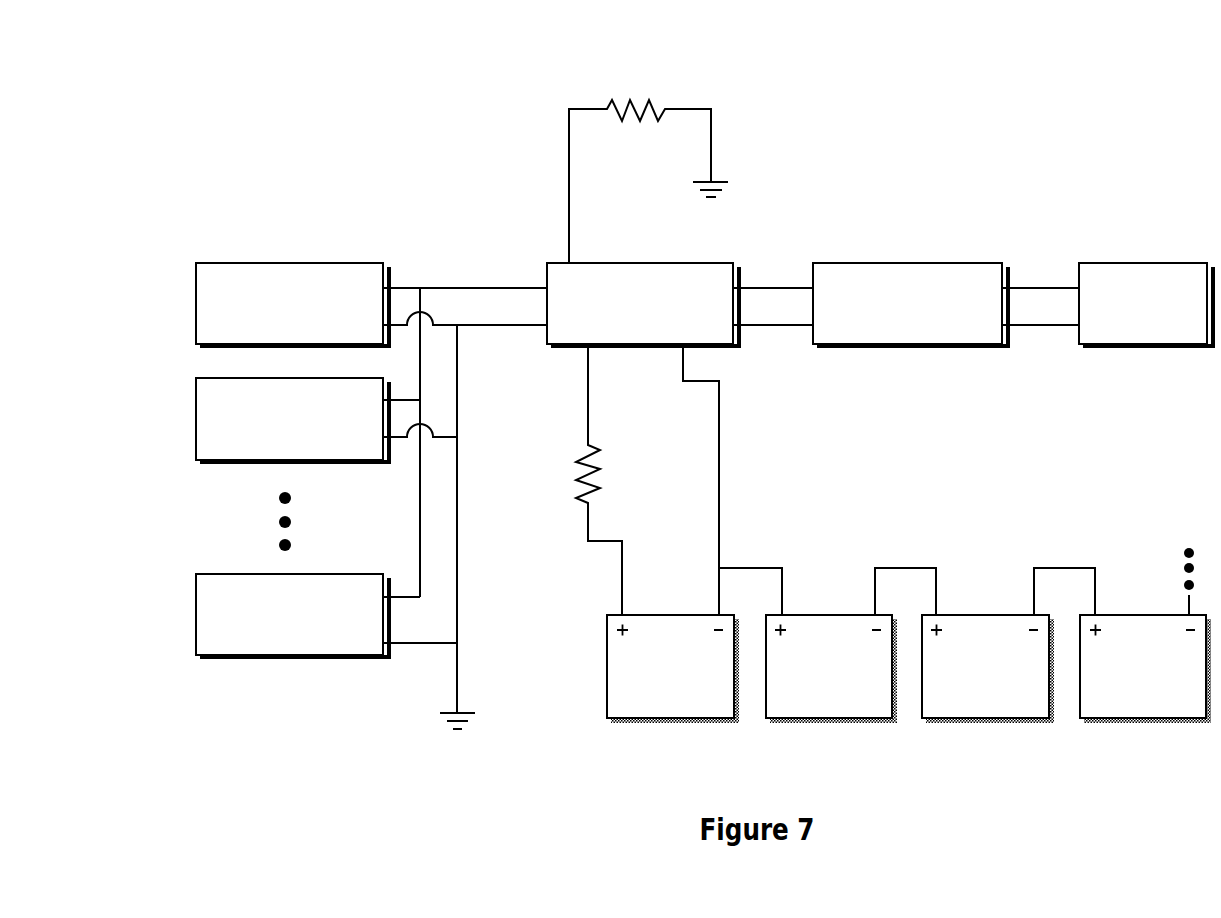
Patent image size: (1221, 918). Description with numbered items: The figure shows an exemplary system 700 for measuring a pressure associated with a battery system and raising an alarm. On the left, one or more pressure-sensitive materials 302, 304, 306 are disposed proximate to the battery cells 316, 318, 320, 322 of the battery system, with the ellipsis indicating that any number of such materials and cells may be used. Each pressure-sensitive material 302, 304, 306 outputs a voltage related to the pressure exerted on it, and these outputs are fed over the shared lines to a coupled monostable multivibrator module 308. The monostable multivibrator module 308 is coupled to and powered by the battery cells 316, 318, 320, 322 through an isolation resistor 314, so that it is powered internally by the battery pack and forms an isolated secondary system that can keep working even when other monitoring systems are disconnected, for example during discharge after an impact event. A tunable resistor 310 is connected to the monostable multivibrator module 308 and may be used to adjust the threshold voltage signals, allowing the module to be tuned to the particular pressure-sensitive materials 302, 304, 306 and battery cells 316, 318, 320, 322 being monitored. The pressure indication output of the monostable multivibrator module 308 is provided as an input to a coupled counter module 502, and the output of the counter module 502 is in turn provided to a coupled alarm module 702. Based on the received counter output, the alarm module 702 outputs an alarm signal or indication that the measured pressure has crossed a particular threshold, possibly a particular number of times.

The system for measuring a pressure associated with a battery system 700 is at (215, 75).
The pressure-sensitive material 302 is at (273, 314).
The pressure-sensitive material 304 is at (273, 429).
The pressure-sensitive material 306 is at (273, 625).
The monostable multivibrator module 308 is at (624, 314).
The resistor 310 is at (631, 98).
The isolation resistor 314 is at (580, 498).
The battery cell 316 is at (654, 677).
The battery cell 318 is at (812, 677).
The battery cell 320 is at (969, 677).
The battery cell 322 is at (1126, 677).
The counter module 502 is at (891, 314).
The alarm module 702 is at (1126, 314).